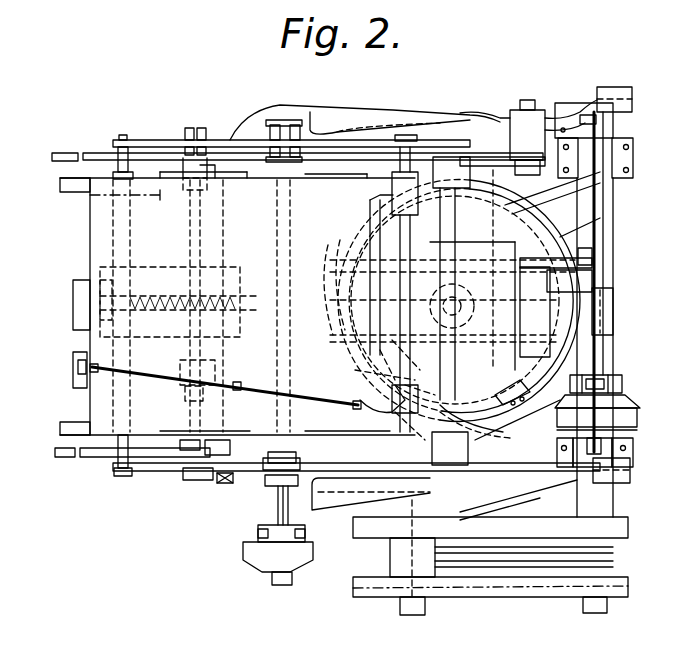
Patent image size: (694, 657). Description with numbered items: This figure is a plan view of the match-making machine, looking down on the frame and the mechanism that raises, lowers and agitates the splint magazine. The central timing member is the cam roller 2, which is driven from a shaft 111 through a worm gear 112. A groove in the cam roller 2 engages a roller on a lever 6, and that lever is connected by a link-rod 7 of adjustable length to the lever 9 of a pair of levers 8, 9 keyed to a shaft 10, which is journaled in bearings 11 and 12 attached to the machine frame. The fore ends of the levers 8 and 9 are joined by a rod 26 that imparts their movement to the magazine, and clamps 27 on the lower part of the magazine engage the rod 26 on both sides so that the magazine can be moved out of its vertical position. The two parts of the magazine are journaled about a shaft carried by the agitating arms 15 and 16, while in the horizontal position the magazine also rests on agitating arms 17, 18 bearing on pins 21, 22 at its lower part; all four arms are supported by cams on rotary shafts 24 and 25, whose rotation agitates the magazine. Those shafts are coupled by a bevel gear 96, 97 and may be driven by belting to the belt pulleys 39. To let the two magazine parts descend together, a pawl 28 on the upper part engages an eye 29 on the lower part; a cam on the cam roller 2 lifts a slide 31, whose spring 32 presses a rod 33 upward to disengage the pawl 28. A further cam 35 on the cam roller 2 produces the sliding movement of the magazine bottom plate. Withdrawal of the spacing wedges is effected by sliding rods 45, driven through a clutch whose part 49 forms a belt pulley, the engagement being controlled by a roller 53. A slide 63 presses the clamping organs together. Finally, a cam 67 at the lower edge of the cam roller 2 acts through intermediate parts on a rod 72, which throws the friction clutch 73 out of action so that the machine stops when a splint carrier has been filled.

The cam roller 2 is at (538, 220).
The lever 6 is at (495, 165).
The link-rod 7 is at (525, 135).
The lever 8 is at (148, 471).
The lever 9 is at (158, 140).
The shaft 10 is at (456, 226).
The bearing 11 is at (345, 500).
The bearing 12 is at (332, 112).
The agitating arm 15 is at (332, 480).
The agitating arm 16 is at (374, 140).
The agitating arm 17 is at (233, 475).
The agitating arm 18 is at (252, 138).
The pin 21 is at (185, 480).
The pin 22 is at (192, 138).
The rotary shaft 24 is at (414, 615).
The rotary shaft 25 is at (192, 228).
The rod 26 is at (120, 158).
The clamps 27 is at (72, 192).
The pawl 28 is at (78, 367).
The eye 29 is at (73, 352).
The slide 31 is at (515, 400).
The spring 32 is at (462, 405).
The rod 33 is at (150, 378).
The cam 35 is at (340, 255).
The belt pulleys 39 is at (468, 515).
The rods 45 is at (70, 152).
The clutch part 49 is at (245, 545).
The roller 53 is at (275, 275).
The slide 63 is at (78, 282).
The cam 67 is at (560, 244).
The rod 72 is at (600, 199).
The friction clutch 73 is at (622, 400).
The bevel gear 96 is at (362, 398).
The bevel gear 97 is at (205, 352).
The shaft 111 is at (605, 262).
The worm gear 112 is at (606, 322).